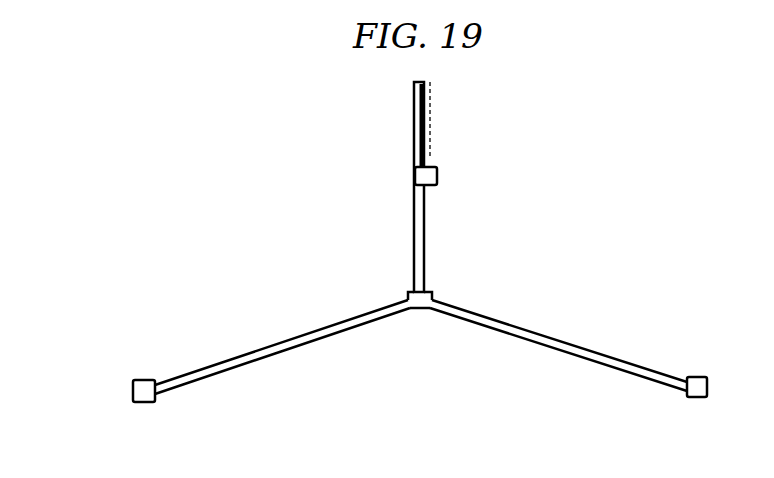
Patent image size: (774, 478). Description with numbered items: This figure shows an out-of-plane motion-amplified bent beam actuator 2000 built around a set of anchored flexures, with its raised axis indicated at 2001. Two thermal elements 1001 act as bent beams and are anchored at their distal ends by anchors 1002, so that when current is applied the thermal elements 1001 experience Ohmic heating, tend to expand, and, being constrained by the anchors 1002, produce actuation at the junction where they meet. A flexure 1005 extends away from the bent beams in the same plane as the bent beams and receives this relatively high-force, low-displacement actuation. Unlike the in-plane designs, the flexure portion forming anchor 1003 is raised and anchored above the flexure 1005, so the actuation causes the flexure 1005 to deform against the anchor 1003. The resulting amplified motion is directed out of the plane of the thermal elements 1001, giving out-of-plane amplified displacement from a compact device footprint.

The probe assembly 2000 is at (294, 128).
The probe axis 2001 is at (430, 128).
The thermal elements 1001 is at (275, 340).
The anchors 1002 is at (140, 402).
The anchor 1003 is at (437, 176).
The flexure 1005 is at (414, 211).